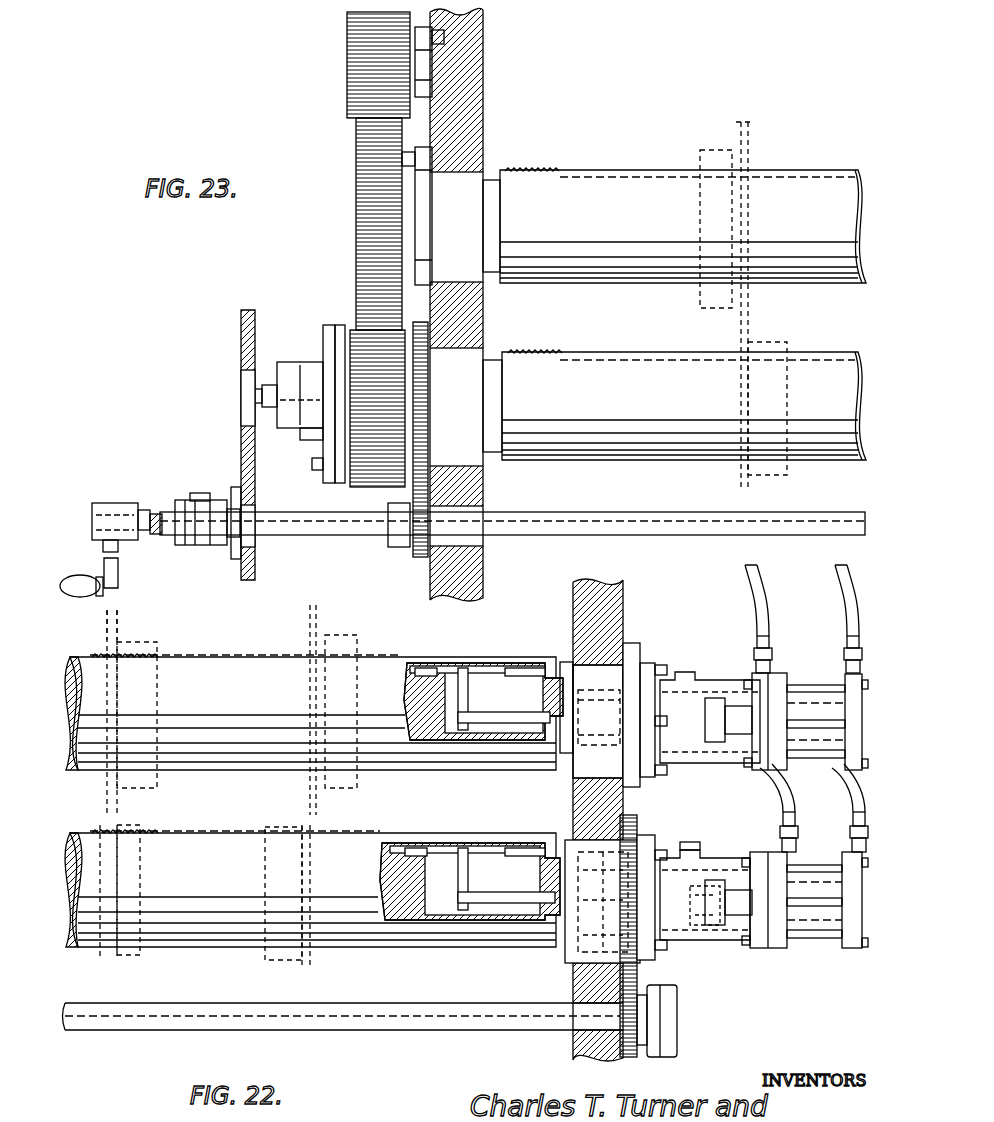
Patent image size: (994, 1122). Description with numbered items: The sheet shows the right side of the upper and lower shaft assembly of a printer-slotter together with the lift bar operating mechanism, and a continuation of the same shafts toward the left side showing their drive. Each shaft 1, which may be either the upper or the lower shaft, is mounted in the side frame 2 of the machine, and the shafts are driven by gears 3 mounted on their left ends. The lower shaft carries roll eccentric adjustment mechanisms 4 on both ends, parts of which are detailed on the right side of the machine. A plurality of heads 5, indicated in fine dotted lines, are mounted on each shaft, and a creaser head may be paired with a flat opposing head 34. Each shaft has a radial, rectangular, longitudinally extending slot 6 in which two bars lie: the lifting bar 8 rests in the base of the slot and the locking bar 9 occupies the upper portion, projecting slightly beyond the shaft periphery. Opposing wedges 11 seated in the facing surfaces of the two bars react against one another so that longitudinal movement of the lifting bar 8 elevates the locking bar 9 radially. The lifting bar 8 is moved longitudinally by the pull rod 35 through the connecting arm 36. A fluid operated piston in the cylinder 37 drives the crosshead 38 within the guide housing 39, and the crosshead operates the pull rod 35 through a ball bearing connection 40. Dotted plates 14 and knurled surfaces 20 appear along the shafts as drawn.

In FIG. 23, the shaft 1 is at (612, 186).
In FIG. 22, the shaft 1 is at (255, 835).
In FIG. 23, the side frame 2 is at (485, 118).
In FIG. 23, the gear 3 is at (352, 290).
In FIG. 23, the roll eccentric adjustment mechanism 4 is at (292, 380).
In FIG. 22, the roll eccentric adjustment mechanism 4 is at (677, 1010).
In FIG. 23, the head 5 is at (698, 293).
In FIG. 22, the head 5 is at (163, 647).
In FIG. 22, the slot 6 is at (545, 673).
In FIG. 22, the lifting bar 8 is at (408, 681).
In FIG. 22, the locking bar 9 is at (440, 665).
In FIG. 22, the wedge 11 is at (412, 672).
In FIG. 23, the guide plate 14 is at (750, 150).
In FIG. 22, the guide plate 14 is at (308, 632).
In FIG. 23, the knurled roller surface 20 is at (548, 170).
In FIG. 22, the knurled roller surface 20 is at (128, 656).
In FIG. 22, the flat opposing head 34 is at (118, 612).
In FIG. 22, the pull rod 35 is at (535, 722).
In FIG. 22, the connecting arm 36 is at (465, 680).
In FIG. 22, the cylinder 37 is at (800, 696).
In FIG. 22, the crosshead 38 is at (710, 708).
In FIG. 22, the guide housing 39 is at (708, 681).
In FIG. 22, the ball bearing connection 40 is at (684, 914).